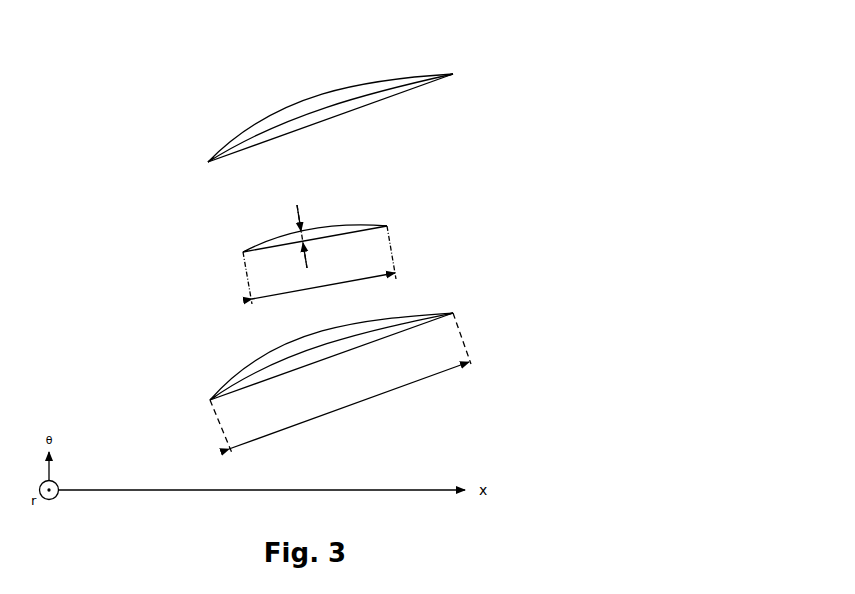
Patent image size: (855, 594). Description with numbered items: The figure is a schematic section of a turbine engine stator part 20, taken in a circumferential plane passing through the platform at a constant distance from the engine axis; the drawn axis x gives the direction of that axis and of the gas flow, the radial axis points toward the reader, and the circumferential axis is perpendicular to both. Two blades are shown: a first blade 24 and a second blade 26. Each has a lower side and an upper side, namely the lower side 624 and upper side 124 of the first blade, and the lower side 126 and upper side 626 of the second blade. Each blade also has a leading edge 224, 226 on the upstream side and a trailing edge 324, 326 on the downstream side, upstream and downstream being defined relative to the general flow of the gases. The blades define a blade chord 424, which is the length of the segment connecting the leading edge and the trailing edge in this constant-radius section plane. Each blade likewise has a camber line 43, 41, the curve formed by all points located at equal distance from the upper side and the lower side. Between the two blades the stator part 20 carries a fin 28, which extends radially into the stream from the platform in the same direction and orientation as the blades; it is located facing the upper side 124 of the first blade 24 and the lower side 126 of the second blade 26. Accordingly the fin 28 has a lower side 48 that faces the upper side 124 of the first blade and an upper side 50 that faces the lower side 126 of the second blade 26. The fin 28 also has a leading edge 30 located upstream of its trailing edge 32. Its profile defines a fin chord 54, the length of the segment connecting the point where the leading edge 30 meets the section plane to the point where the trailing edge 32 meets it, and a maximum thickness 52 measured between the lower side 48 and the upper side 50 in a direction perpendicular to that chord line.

The stator part 20 is at (80, 172).
The first blade 24 is at (429, 309).
The second blade 26 is at (423, 66).
The fin 28 is at (342, 230).
The leading edge of the fin 30 is at (241, 252).
The trailing edge of the fin 32 is at (389, 225).
The camber line of the second blade 41 is at (341, 99).
The camber line of the first blade 43 is at (340, 341).
The lower side of the fin 48 is at (356, 235).
The upper side of the fin 50 is at (277, 236).
The maximum thickness of the fin 52 is at (310, 233).
The fin chord 54 is at (319, 271).
The upper side of the first blade 124 is at (236, 371).
The lower side of the second blade 126 is at (404, 93).
The leading edge of the first blade 224 is at (208, 403).
The leading edge of the second blade 226 is at (207, 164).
The trailing edge of the first blade 324 is at (456, 314).
The trailing edge of the second blade 326 is at (455, 75).
The blade chord 424 is at (340, 383).
The lower side of the first blade 624 is at (294, 371).
The upper side of the second blade 626 is at (249, 126).